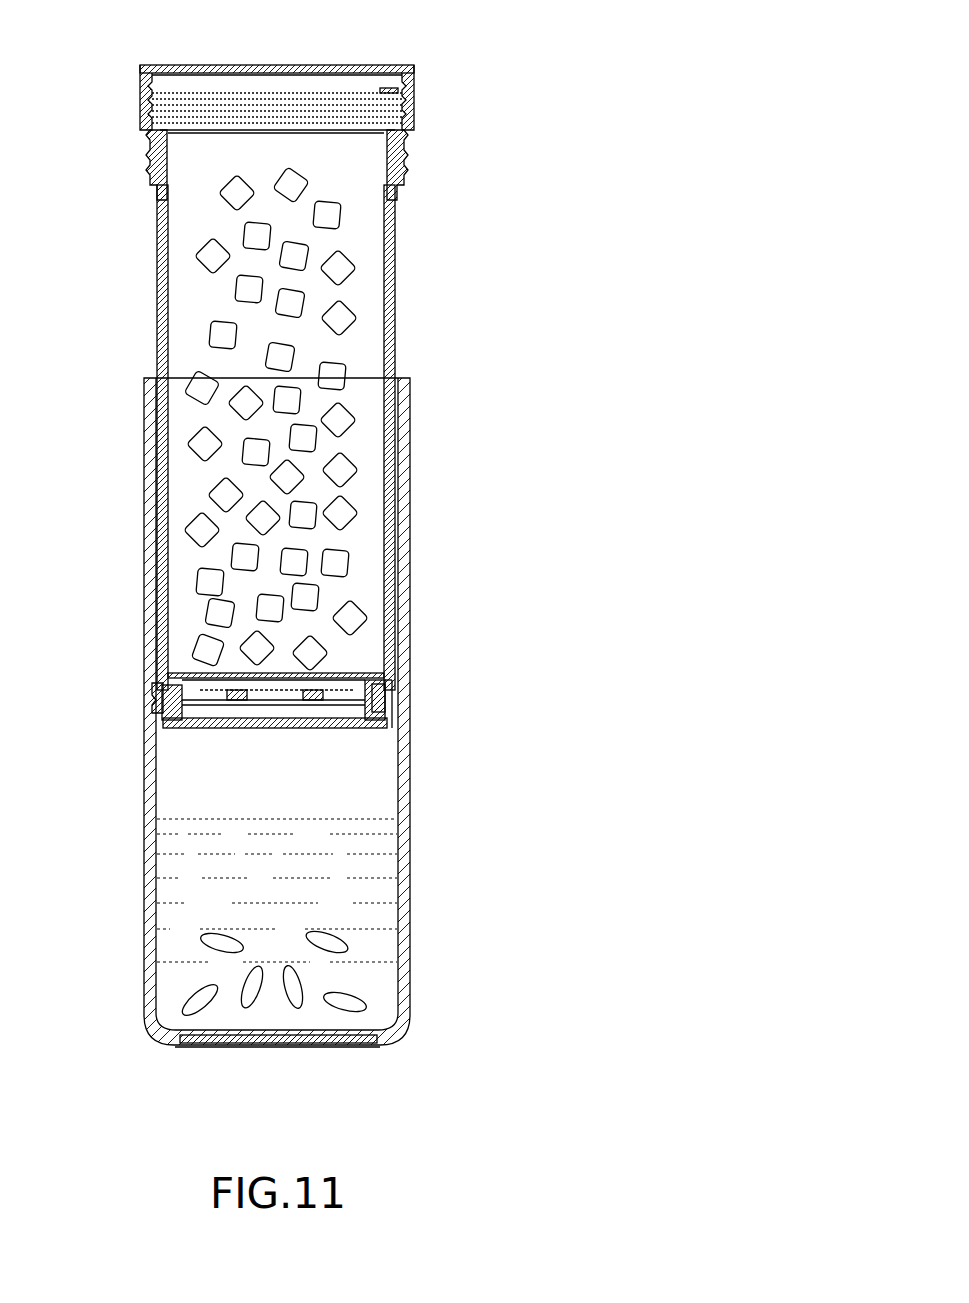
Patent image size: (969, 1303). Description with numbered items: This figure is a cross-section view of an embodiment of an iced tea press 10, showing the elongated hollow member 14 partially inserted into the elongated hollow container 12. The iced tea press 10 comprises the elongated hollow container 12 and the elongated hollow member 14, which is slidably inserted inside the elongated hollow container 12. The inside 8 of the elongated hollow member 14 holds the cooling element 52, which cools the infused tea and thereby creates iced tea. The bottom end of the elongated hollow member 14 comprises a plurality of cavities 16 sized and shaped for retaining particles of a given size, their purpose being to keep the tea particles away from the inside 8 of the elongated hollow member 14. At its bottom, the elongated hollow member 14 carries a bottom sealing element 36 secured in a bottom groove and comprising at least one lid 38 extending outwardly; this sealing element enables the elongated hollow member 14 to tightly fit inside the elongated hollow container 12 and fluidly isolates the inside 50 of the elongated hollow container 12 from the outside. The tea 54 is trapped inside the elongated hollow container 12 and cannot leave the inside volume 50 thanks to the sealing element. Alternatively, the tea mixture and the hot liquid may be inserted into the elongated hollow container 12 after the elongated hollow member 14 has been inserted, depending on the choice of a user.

The iced tea press 10 is at (502, 96).
The elongated hollow member 14 is at (406, 349).
The inside of the elongated hollow member 8 is at (188, 298).
The cooling element 52 is at (200, 396).
The bottom sealing element 36 is at (384, 684).
The lid 38 is at (392, 690).
The plurality of cavities 16 is at (263, 705).
The elongated hollow container 12 is at (147, 795).
The inside volume of the elongated hollow container 50 is at (363, 775).
The tea 54 is at (330, 950).